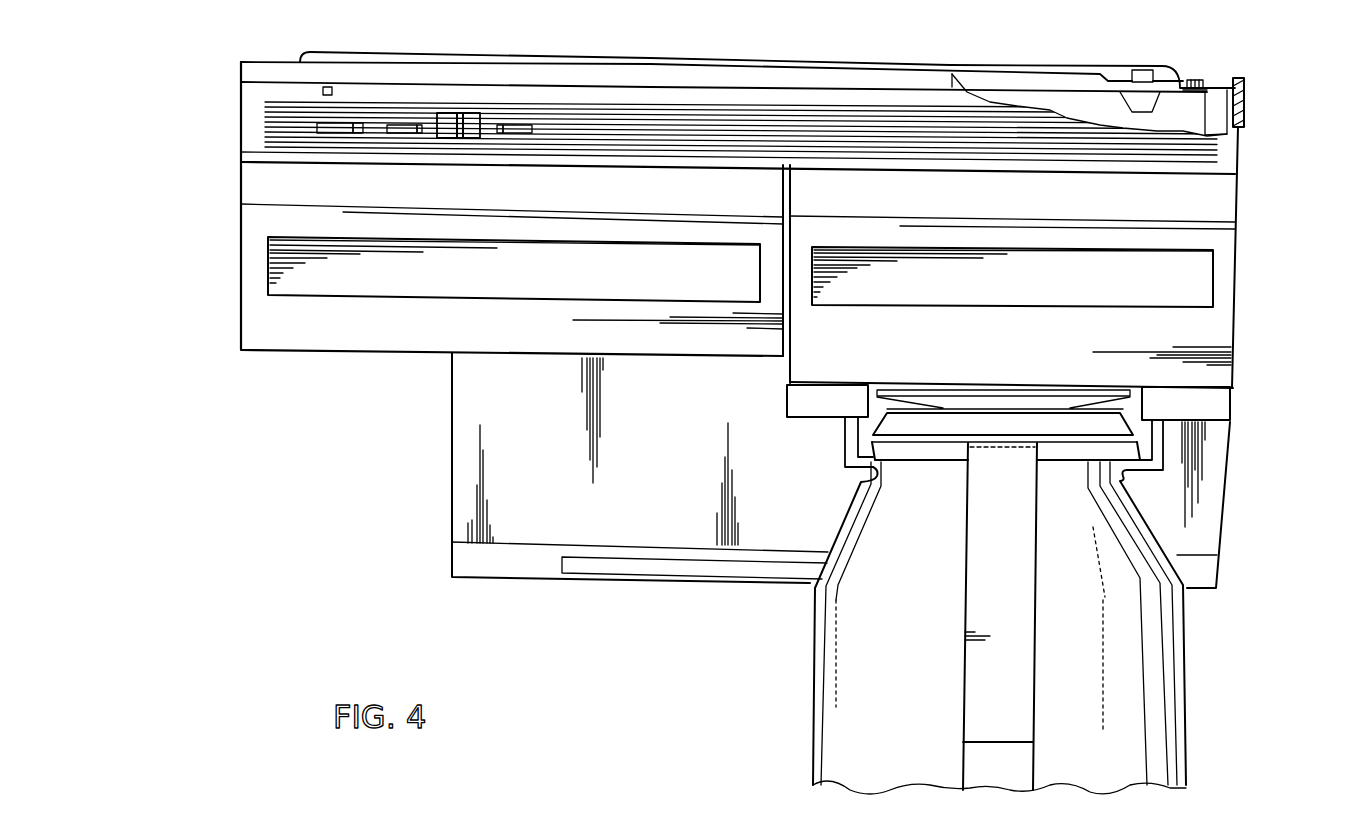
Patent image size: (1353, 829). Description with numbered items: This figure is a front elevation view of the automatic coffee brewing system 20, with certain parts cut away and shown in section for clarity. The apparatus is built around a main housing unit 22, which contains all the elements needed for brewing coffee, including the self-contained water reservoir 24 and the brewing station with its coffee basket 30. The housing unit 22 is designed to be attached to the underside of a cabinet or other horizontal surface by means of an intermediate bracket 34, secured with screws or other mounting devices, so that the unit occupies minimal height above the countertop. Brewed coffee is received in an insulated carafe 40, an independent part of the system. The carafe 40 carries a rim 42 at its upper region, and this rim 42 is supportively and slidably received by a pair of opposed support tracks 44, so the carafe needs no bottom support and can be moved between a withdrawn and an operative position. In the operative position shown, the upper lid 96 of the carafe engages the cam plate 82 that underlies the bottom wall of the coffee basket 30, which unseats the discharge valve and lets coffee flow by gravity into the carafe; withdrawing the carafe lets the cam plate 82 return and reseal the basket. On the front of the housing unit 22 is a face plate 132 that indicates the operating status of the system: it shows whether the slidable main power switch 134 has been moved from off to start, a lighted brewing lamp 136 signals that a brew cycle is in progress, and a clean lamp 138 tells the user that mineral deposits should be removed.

The automatic coffee brewing system 20 is at (714, 664).
The main housing unit 22 is at (1258, 478).
The water reservoir 24 is at (328, 352).
The coffee basket 30 is at (1217, 342).
The intermediate bracket 34 is at (1087, 63).
The insulated carafe 40 is at (1165, 700).
The rim 42 is at (1082, 455).
The support tracks 44 is at (852, 465).
The cam plate 82 is at (945, 400).
The upper lid 96 is at (1034, 428).
The face plate 132 is at (610, 97).
The main power switch 134 is at (477, 123).
The brewing lamp 136 is at (358, 133).
The clean lamp 138 is at (335, 90).